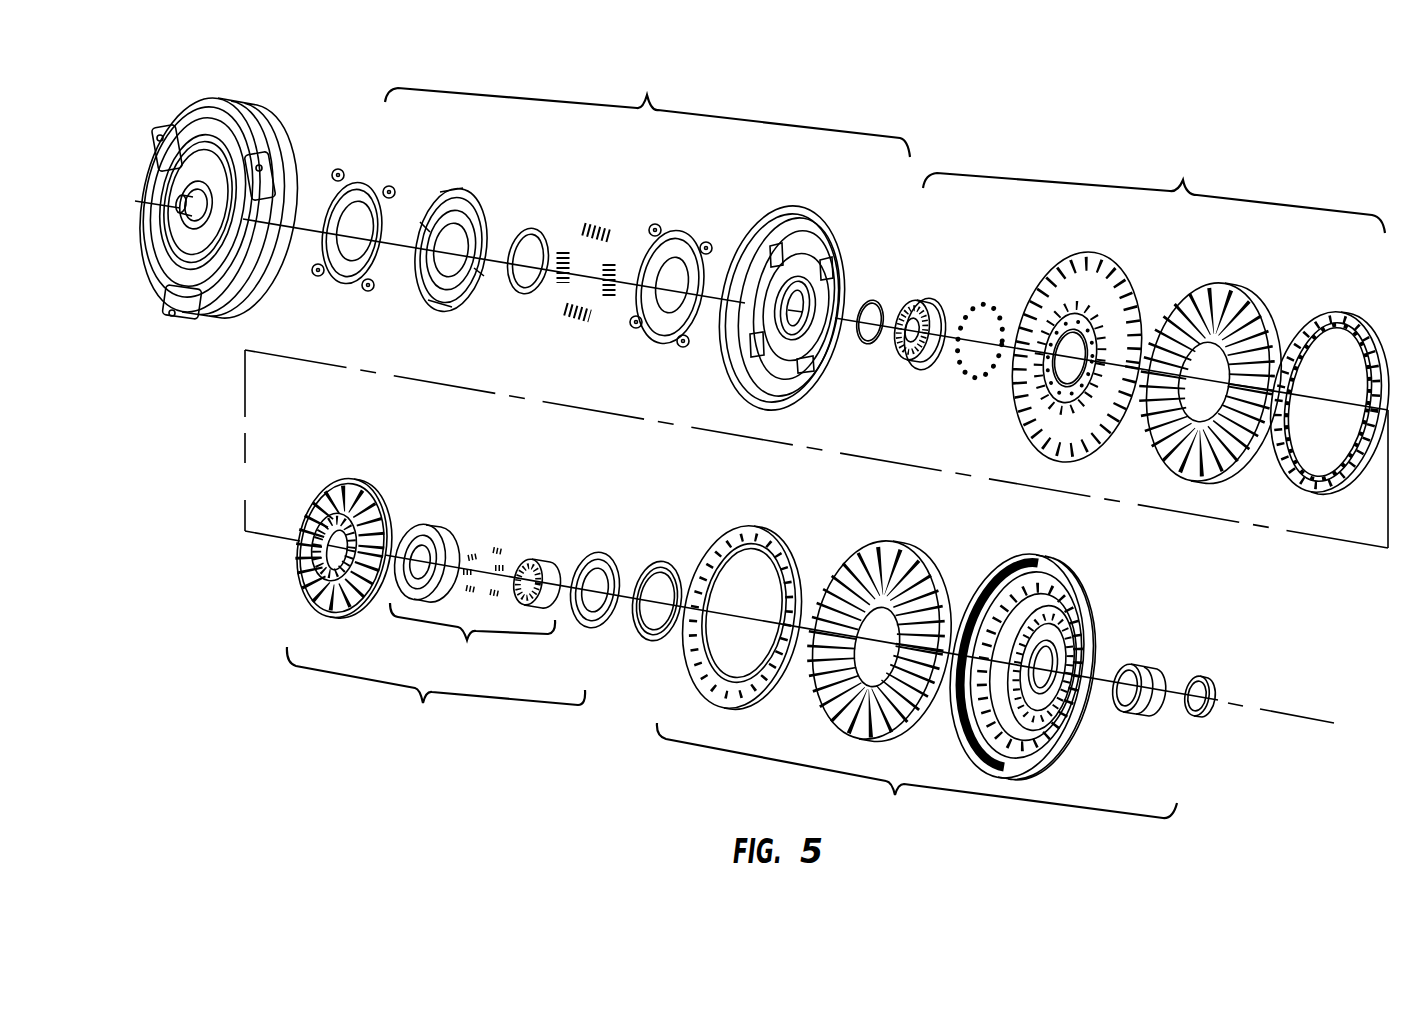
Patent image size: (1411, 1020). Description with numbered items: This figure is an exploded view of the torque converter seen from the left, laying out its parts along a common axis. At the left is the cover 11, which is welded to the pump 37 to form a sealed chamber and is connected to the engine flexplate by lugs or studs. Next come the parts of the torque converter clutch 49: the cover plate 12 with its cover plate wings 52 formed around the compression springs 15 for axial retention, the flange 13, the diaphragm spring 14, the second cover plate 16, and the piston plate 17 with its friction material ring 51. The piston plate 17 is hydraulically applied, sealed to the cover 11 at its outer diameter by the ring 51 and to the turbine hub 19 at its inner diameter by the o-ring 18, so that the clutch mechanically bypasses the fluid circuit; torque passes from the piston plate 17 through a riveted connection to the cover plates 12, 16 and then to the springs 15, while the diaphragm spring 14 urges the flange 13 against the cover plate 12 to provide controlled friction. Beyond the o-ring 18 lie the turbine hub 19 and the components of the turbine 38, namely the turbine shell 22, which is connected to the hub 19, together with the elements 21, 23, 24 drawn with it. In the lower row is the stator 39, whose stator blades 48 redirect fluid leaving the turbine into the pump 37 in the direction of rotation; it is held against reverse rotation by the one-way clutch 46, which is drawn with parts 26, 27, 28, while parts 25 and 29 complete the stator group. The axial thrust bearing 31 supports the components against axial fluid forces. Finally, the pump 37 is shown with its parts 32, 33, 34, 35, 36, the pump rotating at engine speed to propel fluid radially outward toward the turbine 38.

The cover 11 is at (302, 125).
The cover plate wings 52 is at (355, 183).
The cover plate 12 is at (390, 167).
The flange 13 is at (487, 180).
The diaphragm spring 14 is at (545, 218).
The compression springs 15 is at (627, 210).
The cover plate 16 is at (708, 210).
The friction material ring 51 is at (792, 212).
The piston plate 17 is at (845, 202).
The o-ring 18 is at (893, 283).
The turbine hub 19 is at (950, 273).
The rivets 21 is at (1003, 297).
The turbine shell 22 is at (1120, 257).
The turbine blades 23 is at (1247, 278).
The turbine core ring 24 is at (1342, 302).
The stator blades 48 is at (350, 478).
The stator 25 is at (378, 468).
The one-way clutch race 26 is at (448, 508).
The clutch rollers and springs 27 is at (497, 530).
The bearing 28 is at (555, 542).
The bearing race 29 is at (618, 540).
The axial thrust bearings 31 is at (680, 552).
The impeller core ring 32 is at (802, 532).
The impeller blades 33 is at (945, 550).
The impeller shell 34 is at (1108, 580).
The impeller hub 35 is at (1162, 645).
The bushing 36 is at (1215, 663).
The torque converter clutch 49 is at (647, 111).
The turbine 38 is at (1154, 190).
The one-way clutch 46 is at (472, 640).
The stator 39 is at (436, 691).
The pump 37 is at (917, 775).